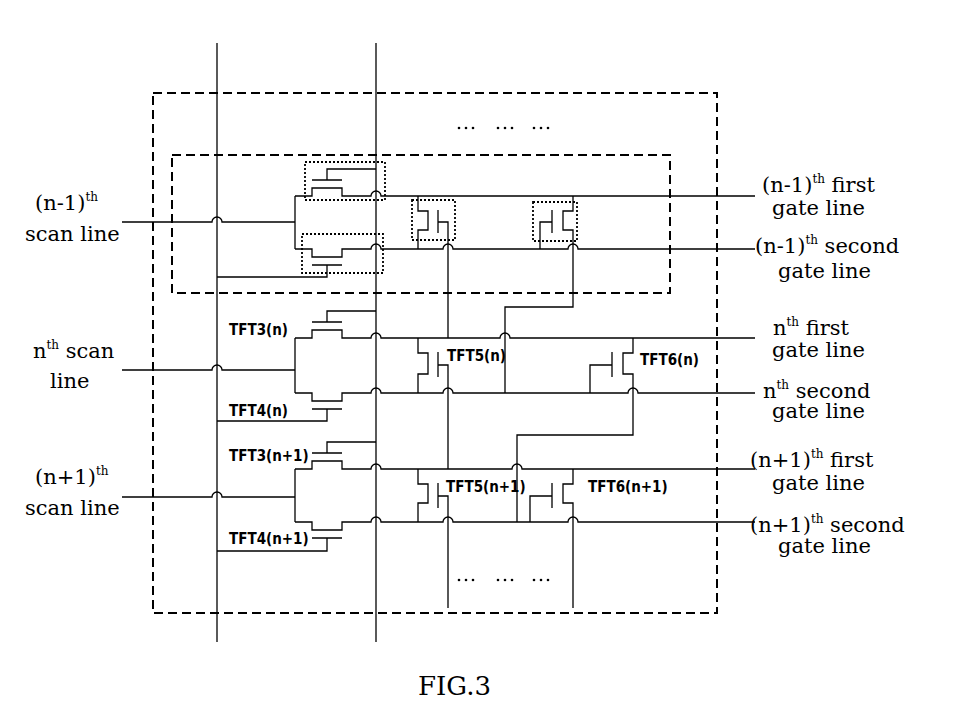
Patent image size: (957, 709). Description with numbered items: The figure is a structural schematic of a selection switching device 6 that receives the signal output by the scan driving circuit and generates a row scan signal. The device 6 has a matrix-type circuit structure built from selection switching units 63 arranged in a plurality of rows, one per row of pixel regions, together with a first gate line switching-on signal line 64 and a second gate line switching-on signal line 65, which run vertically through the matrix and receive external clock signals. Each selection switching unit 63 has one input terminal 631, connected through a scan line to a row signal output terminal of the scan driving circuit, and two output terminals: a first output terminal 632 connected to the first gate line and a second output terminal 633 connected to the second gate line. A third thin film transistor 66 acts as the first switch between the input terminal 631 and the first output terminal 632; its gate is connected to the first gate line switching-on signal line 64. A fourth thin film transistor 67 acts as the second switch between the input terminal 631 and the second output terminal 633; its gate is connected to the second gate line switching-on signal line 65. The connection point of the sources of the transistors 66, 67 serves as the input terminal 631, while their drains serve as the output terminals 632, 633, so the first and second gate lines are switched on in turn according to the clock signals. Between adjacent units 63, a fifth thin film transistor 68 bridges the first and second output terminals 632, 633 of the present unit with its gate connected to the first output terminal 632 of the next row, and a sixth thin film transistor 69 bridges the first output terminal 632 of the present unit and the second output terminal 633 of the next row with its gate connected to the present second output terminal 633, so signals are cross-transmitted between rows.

The selection switching device 6 is at (698, 96).
The selection switching unit 63 is at (602, 159).
The input terminal 631 is at (207, 222).
The first output terminal 632 is at (631, 196).
The second output terminal 633 is at (633, 252).
The first gate line switching-on signal line 64 is at (377, 72).
The second gate line switching-on signal line 65 is at (218, 69).
The third thin film transistor 66 is at (384, 190).
The fourth thin film transistor 67 is at (383, 239).
The fifth thin film transistor 68 is at (453, 202).
The sixth thin film transistor 69 is at (577, 204).